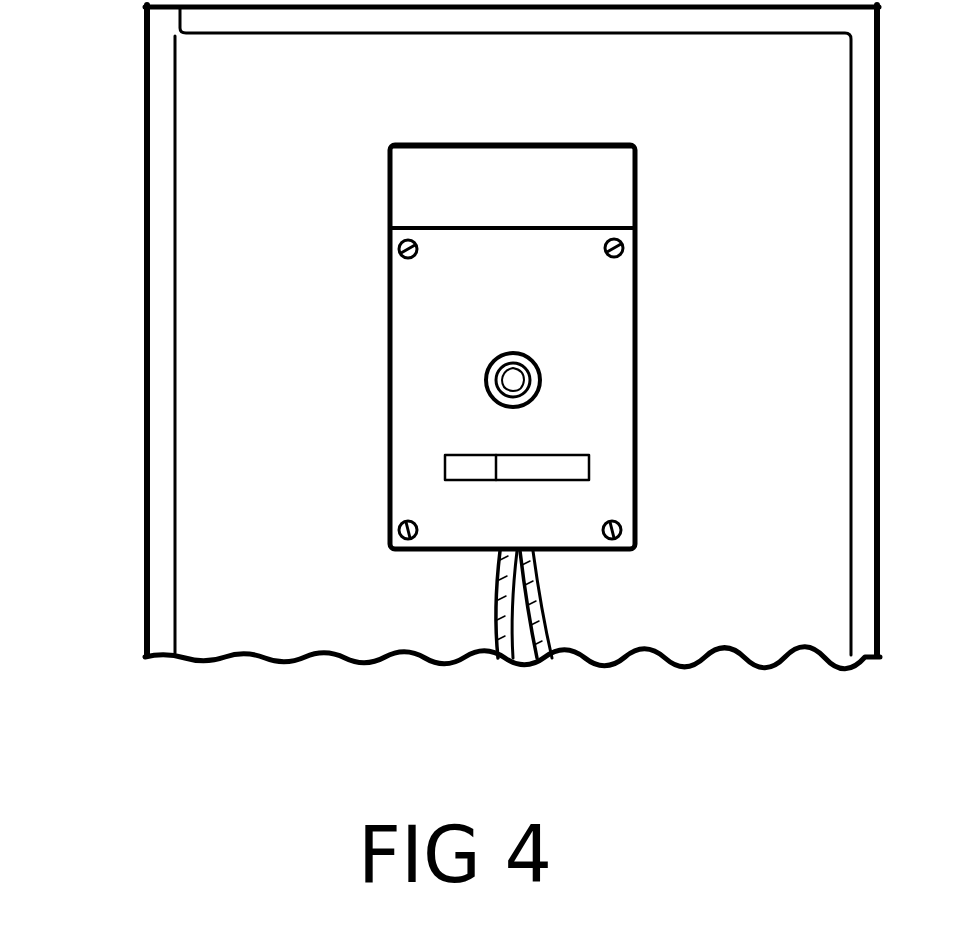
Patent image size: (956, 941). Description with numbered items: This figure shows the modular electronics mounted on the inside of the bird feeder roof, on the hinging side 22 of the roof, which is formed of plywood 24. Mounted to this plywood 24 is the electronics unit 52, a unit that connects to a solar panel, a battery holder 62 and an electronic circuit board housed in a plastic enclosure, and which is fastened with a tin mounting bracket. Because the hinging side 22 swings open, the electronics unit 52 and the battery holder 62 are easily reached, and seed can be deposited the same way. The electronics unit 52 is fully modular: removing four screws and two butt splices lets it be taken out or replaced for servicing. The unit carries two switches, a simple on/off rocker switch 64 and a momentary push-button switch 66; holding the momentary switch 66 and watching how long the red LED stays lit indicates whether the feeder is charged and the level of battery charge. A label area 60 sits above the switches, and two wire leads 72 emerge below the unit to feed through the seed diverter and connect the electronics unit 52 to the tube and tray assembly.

The hinging side 22 is at (688, 680).
The plywood 24 is at (212, 277).
The electronics unit 52 is at (531, 318).
The label area 60 is at (480, 185).
The battery holder 62 is at (435, 145).
The on/off rocker switch 64 is at (543, 467).
The momentary push-button switch 66 is at (490, 394).
The wire leads 72 is at (527, 659).